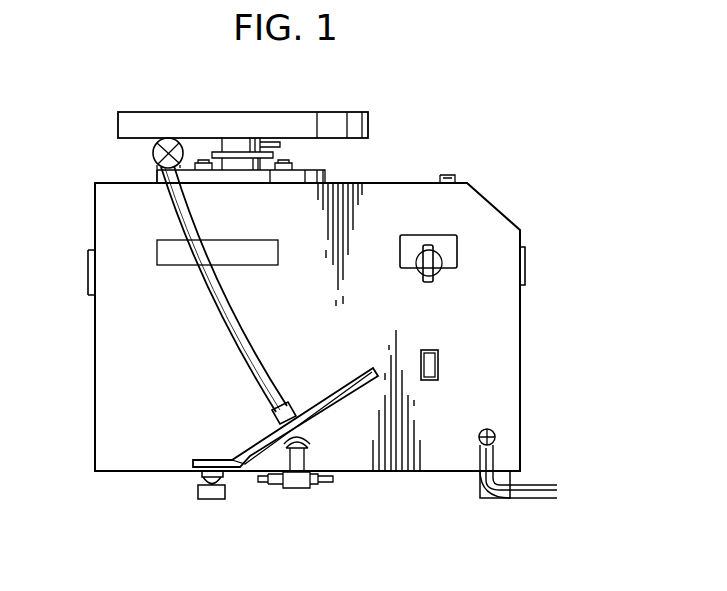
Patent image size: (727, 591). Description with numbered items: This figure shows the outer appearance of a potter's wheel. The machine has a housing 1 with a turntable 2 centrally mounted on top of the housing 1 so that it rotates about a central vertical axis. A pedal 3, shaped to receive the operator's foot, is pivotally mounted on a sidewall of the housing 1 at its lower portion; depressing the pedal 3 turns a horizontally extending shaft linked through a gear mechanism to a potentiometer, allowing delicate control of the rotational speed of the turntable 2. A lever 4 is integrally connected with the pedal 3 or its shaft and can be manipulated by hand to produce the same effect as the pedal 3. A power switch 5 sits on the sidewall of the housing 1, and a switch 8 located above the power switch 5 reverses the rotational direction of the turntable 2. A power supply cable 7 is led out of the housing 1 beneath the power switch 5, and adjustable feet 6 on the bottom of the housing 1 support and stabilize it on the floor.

The housing 1 is at (473, 202).
The turntable 2 is at (370, 125).
The pedal 3 is at (247, 453).
The lever 4 is at (153, 155).
The power switch 5 is at (440, 365).
The adjustable feet 6 is at (212, 500).
The power supply cable 7 is at (495, 433).
The switch 8 is at (438, 262).